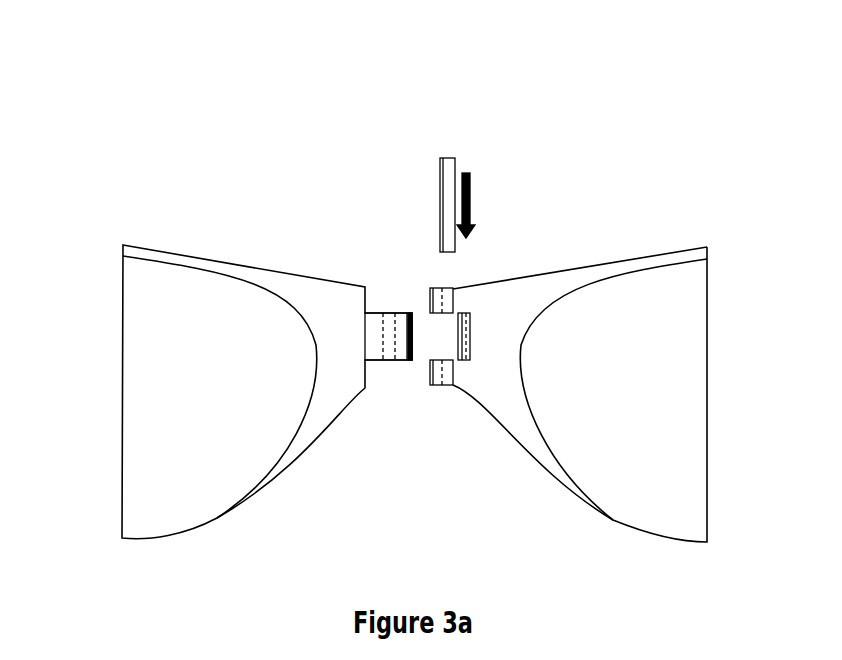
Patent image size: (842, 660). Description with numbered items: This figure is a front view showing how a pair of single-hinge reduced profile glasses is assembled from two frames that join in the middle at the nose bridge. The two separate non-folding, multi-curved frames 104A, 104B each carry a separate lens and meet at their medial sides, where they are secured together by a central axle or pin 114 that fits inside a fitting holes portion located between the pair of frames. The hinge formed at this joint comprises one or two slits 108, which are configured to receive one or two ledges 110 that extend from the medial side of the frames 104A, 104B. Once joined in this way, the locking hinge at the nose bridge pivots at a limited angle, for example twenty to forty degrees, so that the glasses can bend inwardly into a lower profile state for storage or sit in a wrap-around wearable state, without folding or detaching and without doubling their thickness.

The frame 104A is at (177, 257).
The frame 104B is at (545, 280).
The central axle or pin 114 is at (571, 348).
The ledge 110 is at (408, 339).
The slit 108 is at (457, 337).